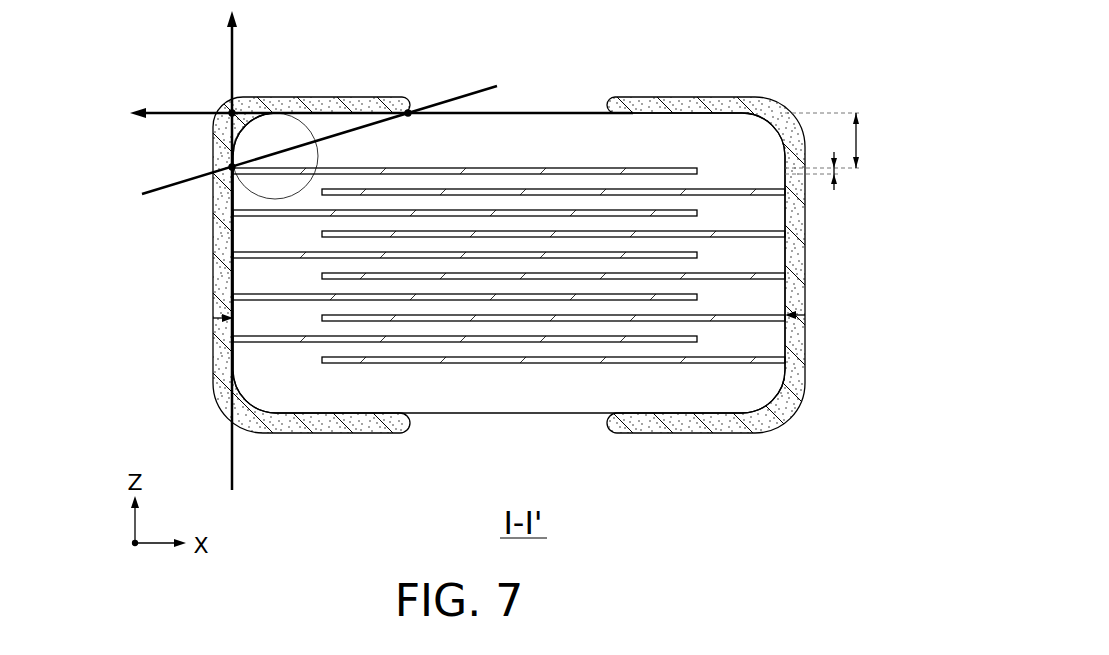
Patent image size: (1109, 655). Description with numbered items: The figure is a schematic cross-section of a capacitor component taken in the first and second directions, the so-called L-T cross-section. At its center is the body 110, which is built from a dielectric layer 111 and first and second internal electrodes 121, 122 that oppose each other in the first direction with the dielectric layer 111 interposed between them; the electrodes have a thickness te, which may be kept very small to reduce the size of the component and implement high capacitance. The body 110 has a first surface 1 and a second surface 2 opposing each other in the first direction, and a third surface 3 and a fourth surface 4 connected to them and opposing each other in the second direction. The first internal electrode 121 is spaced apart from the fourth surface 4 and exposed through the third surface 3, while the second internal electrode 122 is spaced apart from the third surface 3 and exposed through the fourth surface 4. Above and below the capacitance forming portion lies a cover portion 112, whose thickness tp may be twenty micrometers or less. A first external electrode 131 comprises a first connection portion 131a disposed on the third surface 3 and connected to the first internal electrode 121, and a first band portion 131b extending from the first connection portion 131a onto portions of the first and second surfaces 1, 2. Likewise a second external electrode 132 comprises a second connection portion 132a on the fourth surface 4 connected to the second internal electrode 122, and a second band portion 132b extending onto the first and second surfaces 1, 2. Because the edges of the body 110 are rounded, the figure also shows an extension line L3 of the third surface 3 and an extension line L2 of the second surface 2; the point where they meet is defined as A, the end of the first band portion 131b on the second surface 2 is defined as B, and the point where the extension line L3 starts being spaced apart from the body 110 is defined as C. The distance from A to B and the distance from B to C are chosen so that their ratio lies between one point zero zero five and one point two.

The first surface 1 is at (477, 426).
The body 110 is at (511, 111).
The dielectric layer 111 is at (658, 180).
The cover portion 112 is at (555, 147).
The first internal electrode 121 is at (608, 166).
The second internal electrode 122 is at (745, 188).
The first external electrode 131 is at (110, 225).
The first connection portion 131a is at (222, 288).
The first band portion 131b is at (214, 200).
The second external electrode 132 is at (886, 358).
The second connection portion 132a is at (798, 360).
The second band portion 132b is at (733, 433).
The third surface 3 is at (213, 318).
The fourth surface 4 is at (806, 316).
The second surface 2 is at (478, 98).
The extension line of the second surface L2 is at (170, 110).
The extension line of the third surface L3 is at (235, 57).
The point A is at (228, 111).
The point B is at (409, 110).
The point C is at (227, 164).
The thickness of the cover portion tp is at (858, 142).
The thickness of the internal electrodes te is at (837, 172).